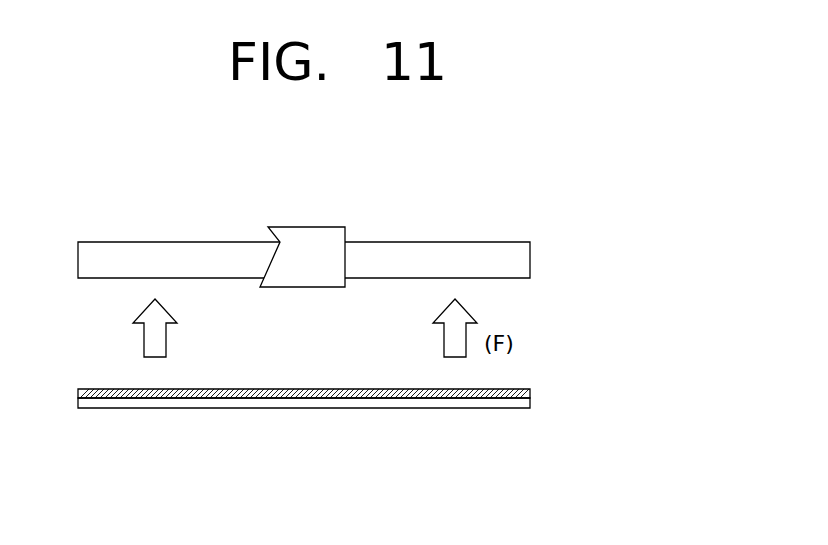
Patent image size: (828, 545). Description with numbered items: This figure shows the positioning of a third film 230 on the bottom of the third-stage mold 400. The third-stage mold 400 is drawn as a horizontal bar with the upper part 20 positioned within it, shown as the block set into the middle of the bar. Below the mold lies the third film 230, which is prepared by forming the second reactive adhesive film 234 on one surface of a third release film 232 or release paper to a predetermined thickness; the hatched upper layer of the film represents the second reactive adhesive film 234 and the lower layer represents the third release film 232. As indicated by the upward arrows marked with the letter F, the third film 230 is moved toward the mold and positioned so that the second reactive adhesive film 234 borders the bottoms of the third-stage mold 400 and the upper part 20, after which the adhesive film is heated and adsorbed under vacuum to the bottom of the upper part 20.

The third-stage mold 400 is at (535, 252).
The upper part 20 is at (306, 237).
The third film 230 is at (351, 440).
The second reactive adhesive film 234 is at (532, 391).
The third release film 232 is at (500, 418).